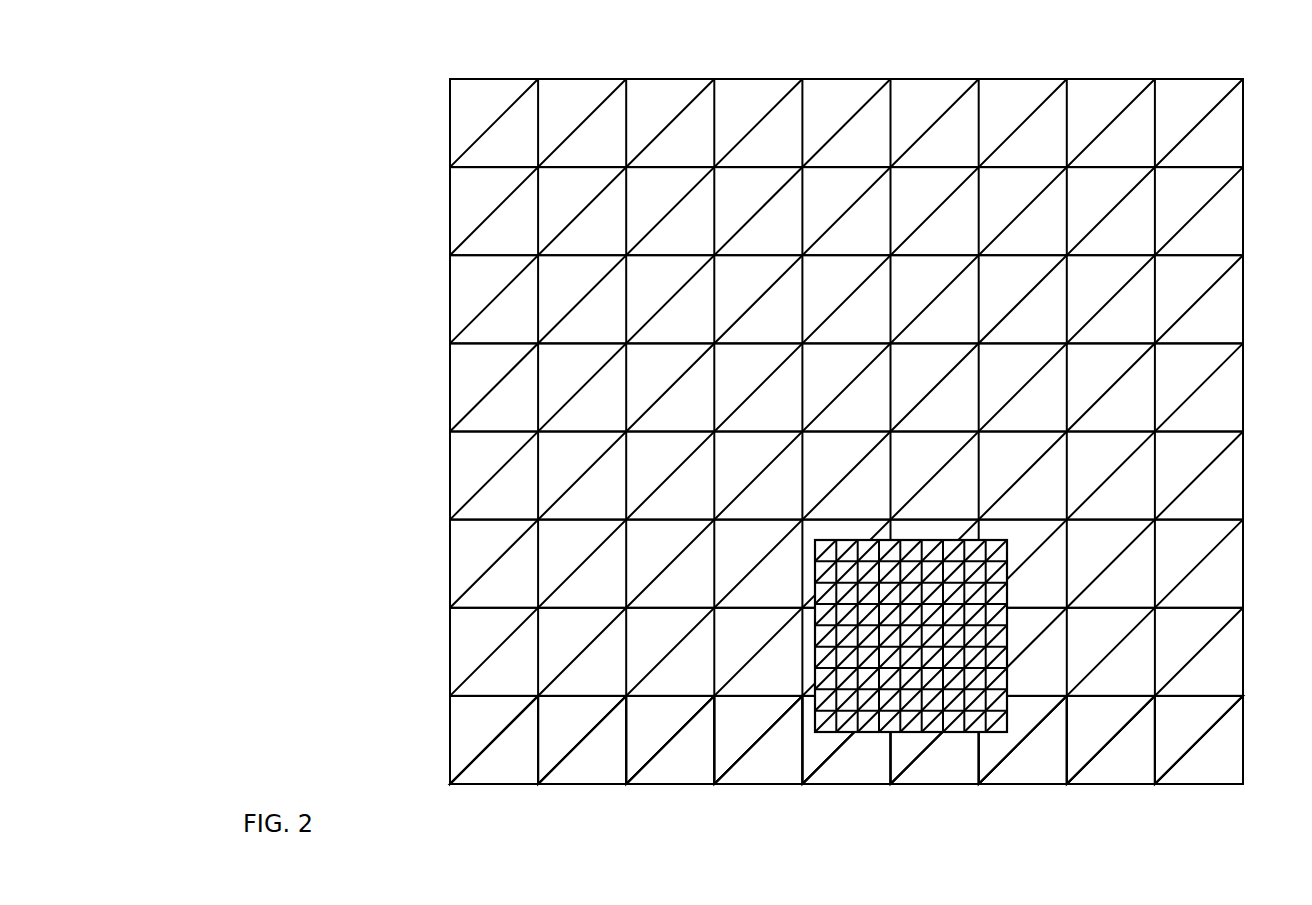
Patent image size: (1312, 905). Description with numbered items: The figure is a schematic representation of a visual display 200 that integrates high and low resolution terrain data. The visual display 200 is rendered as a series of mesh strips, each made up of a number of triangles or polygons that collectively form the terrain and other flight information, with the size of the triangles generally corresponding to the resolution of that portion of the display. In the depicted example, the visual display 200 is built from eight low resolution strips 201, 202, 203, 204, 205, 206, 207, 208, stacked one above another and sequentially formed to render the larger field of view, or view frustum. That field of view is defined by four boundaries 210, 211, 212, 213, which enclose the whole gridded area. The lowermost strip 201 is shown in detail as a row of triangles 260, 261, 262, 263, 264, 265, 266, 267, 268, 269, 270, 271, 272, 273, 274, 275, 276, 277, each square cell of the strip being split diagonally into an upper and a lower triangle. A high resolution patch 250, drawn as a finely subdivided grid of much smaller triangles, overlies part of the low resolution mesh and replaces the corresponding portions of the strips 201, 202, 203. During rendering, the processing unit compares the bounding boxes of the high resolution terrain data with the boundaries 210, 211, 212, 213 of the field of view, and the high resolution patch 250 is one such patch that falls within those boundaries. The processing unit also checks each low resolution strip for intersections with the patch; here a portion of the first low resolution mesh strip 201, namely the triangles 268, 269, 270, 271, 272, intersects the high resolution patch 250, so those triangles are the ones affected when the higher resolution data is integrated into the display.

The visual display 200 is at (322, 108).
The low resolution strip 201 is at (450, 733).
The low resolution strip 202 is at (450, 645).
The low resolution strip 203 is at (450, 557).
The low resolution strip 204 is at (450, 468).
The low resolution strip 205 is at (450, 380).
The low resolution strip 206 is at (450, 292).
The low resolution strip 207 is at (450, 204).
The low resolution strip 208 is at (450, 116).
The boundary 210 is at (436, 88).
The boundary 211 is at (484, 66).
The boundary 212 is at (1256, 216).
The boundary 213 is at (584, 798).
The high resolution patch 250 is at (874, 750).
The triangle 260 is at (503, 722).
The triangle 261 is at (486, 774).
The triangle 262 is at (591, 722).
The triangle 263 is at (574, 774).
The triangle 264 is at (679, 722).
The triangle 265 is at (662, 774).
The triangle 266 is at (767, 722).
The triangle 267 is at (750, 774).
The triangle 268 is at (821, 750).
The triangle 269 is at (835, 768).
The triangle 270 is at (903, 752).
The triangle 271 is at (945, 768).
The triangle 272 is at (988, 755).
The triangle 273 is at (1014, 774).
The triangle 274 is at (1120, 722).
The triangle 275 is at (1103, 774).
The triangle 276 is at (1208, 722).
The triangle 277 is at (1191, 774).